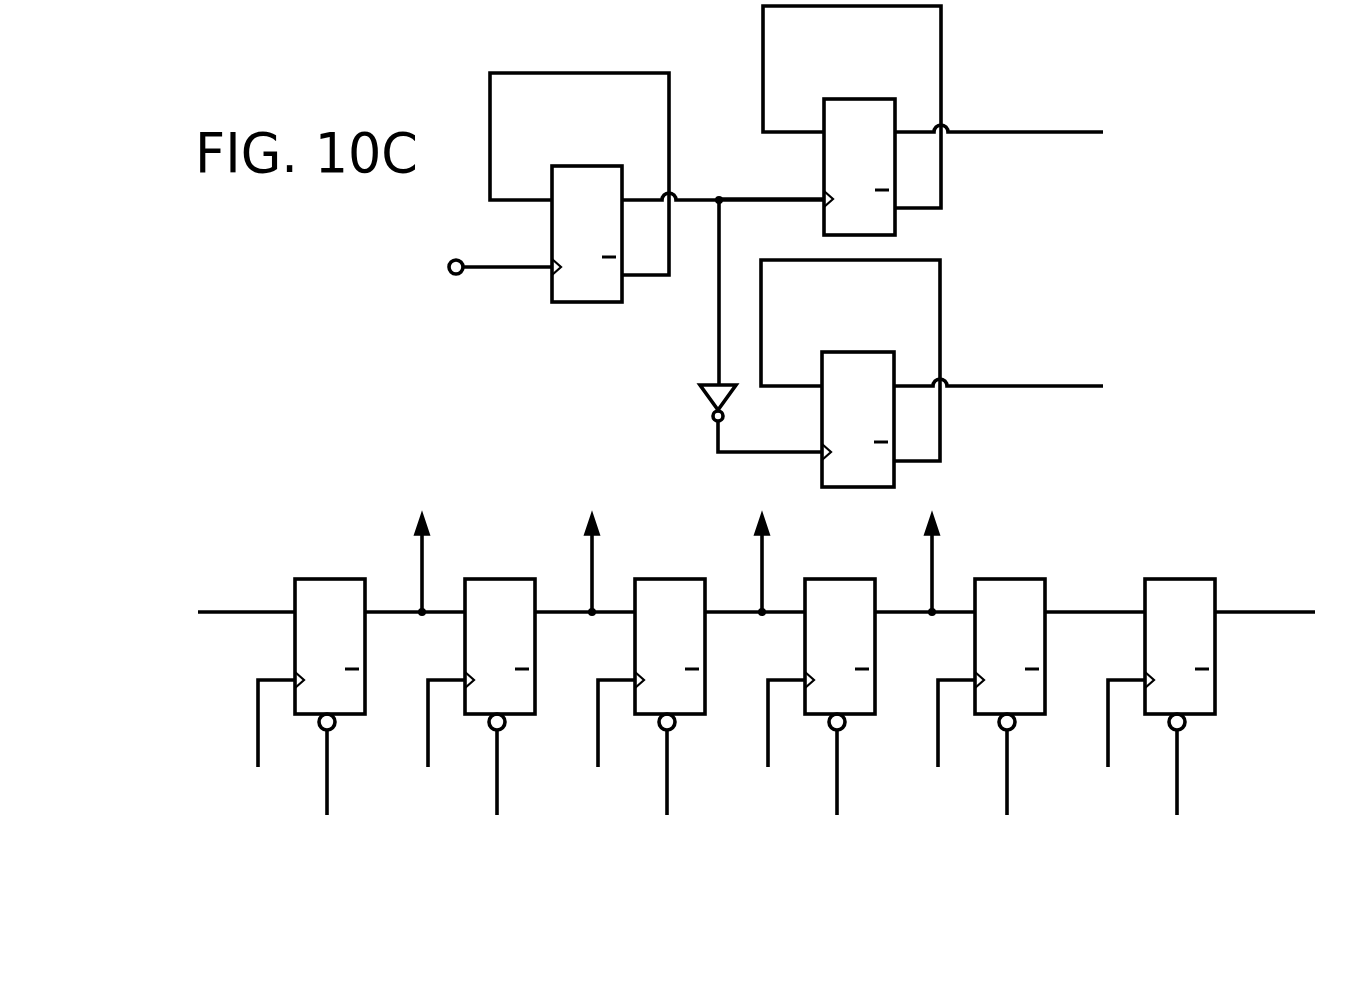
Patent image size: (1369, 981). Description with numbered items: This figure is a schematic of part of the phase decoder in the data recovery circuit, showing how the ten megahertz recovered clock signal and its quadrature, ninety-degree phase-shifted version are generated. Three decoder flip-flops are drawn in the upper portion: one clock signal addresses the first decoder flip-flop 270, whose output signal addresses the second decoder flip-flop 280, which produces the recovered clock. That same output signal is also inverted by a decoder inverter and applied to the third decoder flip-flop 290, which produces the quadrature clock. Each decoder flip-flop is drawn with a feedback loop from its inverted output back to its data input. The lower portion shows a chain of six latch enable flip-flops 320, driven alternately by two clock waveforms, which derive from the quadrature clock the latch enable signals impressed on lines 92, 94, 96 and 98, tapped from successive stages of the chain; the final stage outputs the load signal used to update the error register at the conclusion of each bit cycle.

The first decoder flip-flop 270 is at (605, 166).
The second decoder flip-flop 280 is at (874, 99).
The third decoder flip-flop 290 is at (874, 352).
The latch enable flip-flops 320 is at (344, 580).
The line 92 is at (419, 546).
The line 94 is at (589, 546).
The line 96 is at (759, 546).
The line 98 is at (929, 546).